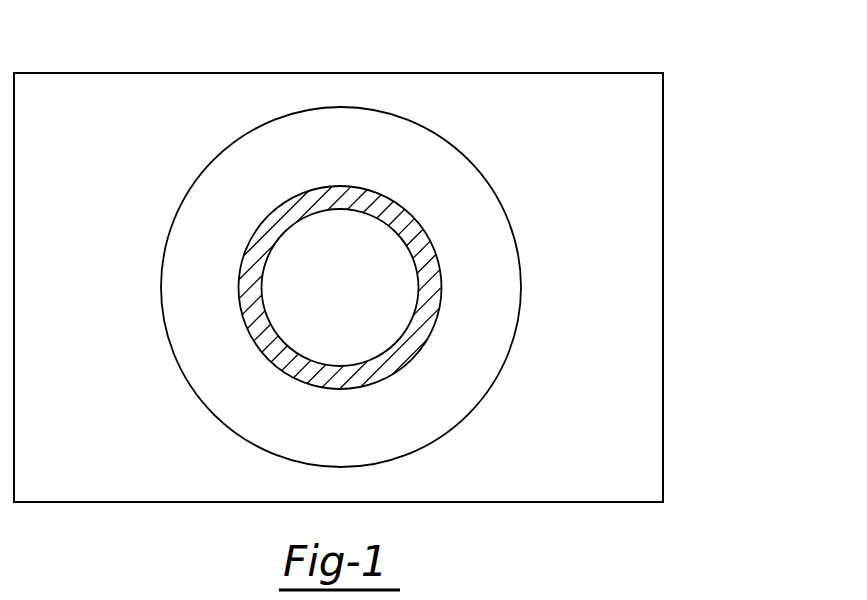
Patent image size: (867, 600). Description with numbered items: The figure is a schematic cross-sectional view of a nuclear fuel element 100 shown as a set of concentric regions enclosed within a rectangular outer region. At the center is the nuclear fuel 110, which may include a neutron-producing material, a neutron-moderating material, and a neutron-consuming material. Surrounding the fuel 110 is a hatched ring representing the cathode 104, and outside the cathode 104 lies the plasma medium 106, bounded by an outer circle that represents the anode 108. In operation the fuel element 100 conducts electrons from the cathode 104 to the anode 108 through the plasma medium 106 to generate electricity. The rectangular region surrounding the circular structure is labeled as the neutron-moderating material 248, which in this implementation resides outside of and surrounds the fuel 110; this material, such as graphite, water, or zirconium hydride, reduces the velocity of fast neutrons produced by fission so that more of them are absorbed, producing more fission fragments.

The nuclear fuel element 100 is at (539, 59).
The cathode 104 is at (238, 287).
The plasma medium 106 is at (228, 197).
The anode 108 is at (480, 177).
The nuclear fuel 110 is at (370, 329).
The neutron-moderating material 248 is at (607, 295).